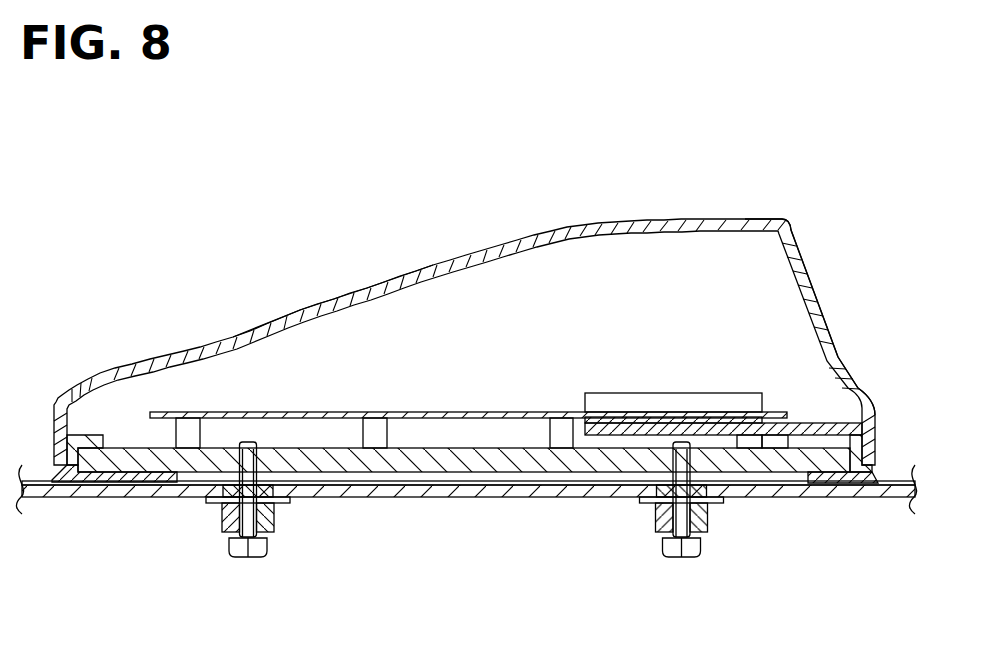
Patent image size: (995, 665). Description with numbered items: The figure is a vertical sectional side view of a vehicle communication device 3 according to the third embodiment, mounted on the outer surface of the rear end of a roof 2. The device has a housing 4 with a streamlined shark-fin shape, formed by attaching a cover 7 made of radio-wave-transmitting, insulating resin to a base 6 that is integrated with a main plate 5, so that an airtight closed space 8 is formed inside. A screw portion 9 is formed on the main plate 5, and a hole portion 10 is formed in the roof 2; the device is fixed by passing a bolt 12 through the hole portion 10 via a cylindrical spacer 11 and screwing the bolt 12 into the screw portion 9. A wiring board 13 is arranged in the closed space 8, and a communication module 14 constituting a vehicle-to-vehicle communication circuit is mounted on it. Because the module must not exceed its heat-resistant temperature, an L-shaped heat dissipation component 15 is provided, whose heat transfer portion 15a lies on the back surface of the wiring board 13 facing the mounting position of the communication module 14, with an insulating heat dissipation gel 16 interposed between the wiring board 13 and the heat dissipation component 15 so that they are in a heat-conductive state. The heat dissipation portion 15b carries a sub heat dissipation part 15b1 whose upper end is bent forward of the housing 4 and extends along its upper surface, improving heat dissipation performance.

The roof 2 is at (834, 497).
The vehicle communication device 3 is at (487, 192).
The housing 4 is at (623, 218).
The main plate 5 is at (455, 481).
The base 6 is at (876, 480).
The cover 7 is at (362, 289).
The closed space 8 is at (559, 322).
The screw portion 9 is at (253, 456).
The hole portion 10 is at (270, 525).
The cylindrical spacer 11 is at (222, 516).
The bolt 12 is at (245, 557).
The wiring board 13 is at (453, 412).
The communication module 14 is at (676, 393).
The heat dissipation component 15 is at (803, 421).
The heat transfer portion 15a is at (833, 420).
The heat dissipation portion 15b is at (808, 279).
The sub heat dissipation part 15b1 is at (733, 219).
The heat dissipation gel 16 is at (580, 417).